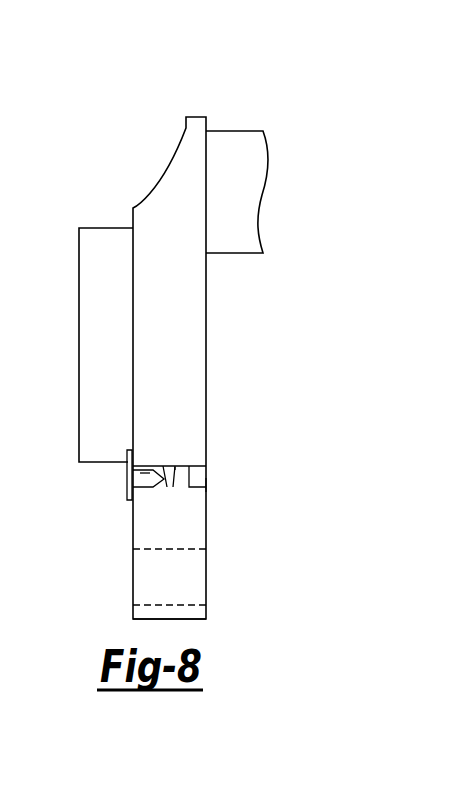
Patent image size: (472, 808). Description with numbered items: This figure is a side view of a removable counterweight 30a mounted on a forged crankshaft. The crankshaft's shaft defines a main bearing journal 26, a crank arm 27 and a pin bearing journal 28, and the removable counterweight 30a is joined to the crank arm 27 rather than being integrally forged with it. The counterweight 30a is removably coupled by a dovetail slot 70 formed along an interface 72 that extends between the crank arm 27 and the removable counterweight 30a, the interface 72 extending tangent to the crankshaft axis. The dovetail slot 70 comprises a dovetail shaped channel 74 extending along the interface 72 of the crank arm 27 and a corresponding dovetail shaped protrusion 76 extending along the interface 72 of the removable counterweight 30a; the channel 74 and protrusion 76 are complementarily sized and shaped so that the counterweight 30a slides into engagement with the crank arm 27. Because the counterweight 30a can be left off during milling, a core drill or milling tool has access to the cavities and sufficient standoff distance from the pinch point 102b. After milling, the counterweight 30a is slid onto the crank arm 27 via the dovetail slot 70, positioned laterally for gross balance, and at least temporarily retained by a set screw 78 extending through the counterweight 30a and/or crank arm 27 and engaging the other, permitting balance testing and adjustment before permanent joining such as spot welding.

The main bearing journal 26 is at (95, 232).
The crank arm 27 is at (163, 182).
The pin bearing journal 28 is at (235, 132).
The removable counterweight 30a is at (206, 616).
The dovetail slot 70 is at (201, 480).
The interface 72 is at (127, 490).
The dovetail shaped channel 74 is at (175, 467).
The dovetail shaped protrusion 76 is at (177, 465).
The set screw 78 is at (145, 478).
The pinch point 102b is at (206, 485).